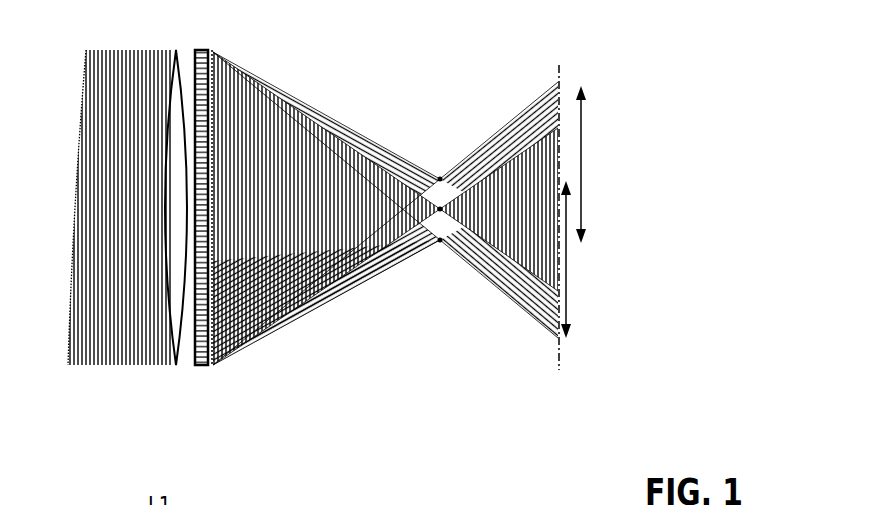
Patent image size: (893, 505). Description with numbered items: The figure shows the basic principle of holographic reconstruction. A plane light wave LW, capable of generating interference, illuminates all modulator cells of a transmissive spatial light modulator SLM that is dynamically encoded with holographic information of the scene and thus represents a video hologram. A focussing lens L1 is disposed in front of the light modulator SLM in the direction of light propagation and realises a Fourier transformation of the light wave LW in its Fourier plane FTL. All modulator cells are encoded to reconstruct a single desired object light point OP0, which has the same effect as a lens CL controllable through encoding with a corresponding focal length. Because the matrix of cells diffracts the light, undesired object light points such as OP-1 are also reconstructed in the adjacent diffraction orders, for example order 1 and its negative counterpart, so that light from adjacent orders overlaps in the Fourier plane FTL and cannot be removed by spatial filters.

The plane light wave LW is at (116, 230).
The focussing lens L1 is at (173, 191).
The transmissive spatial light modulator SLM is at (226, 228).
The encoded lens CL is at (205, 73).
The object light point OP0 is at (432, 204).
The object light point in diffraction order -1 OP-1 is at (432, 238).
The Fourier plane FTL is at (580, 194).
The diffraction order + 1 is at (588, 164).